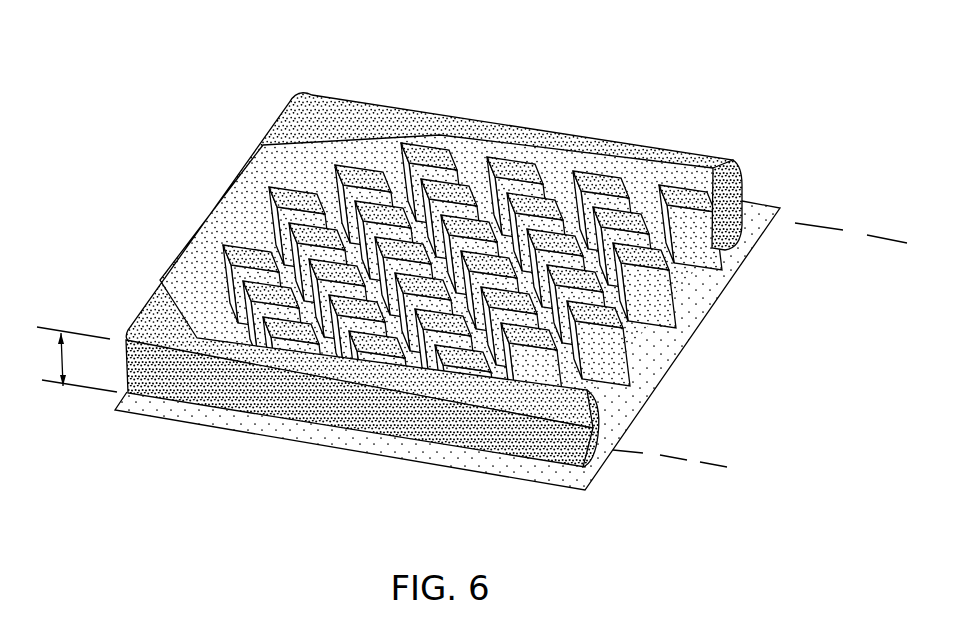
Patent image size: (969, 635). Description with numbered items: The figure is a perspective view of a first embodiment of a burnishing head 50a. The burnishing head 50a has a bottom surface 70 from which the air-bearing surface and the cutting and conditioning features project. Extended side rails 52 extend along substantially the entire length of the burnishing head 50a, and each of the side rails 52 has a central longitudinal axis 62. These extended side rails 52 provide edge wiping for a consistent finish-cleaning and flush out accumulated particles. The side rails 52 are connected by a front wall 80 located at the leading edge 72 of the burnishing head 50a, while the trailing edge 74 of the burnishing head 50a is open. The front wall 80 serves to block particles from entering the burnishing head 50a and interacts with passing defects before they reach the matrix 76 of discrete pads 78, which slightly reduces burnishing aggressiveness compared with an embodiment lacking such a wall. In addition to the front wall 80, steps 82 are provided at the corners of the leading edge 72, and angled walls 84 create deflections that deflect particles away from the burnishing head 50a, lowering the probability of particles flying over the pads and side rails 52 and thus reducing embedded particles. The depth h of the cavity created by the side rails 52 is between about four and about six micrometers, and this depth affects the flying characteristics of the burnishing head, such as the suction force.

The burnishing head 50a is at (58, 174).
The extended side rails 52 is at (408, 430).
The central longitudinal axes 62 is at (837, 228).
The bottom surface 70 is at (763, 210).
The leading edge 72 is at (403, 276).
The trailing edge 74 is at (723, 317).
The matrix of discrete pads 76 is at (687, 265).
The discrete pads 78 is at (412, 130).
The front wall 80 is at (197, 238).
The steps 82 is at (310, 105).
The angled walls 84 is at (423, 278).
The depth of the cavity h is at (58, 353).